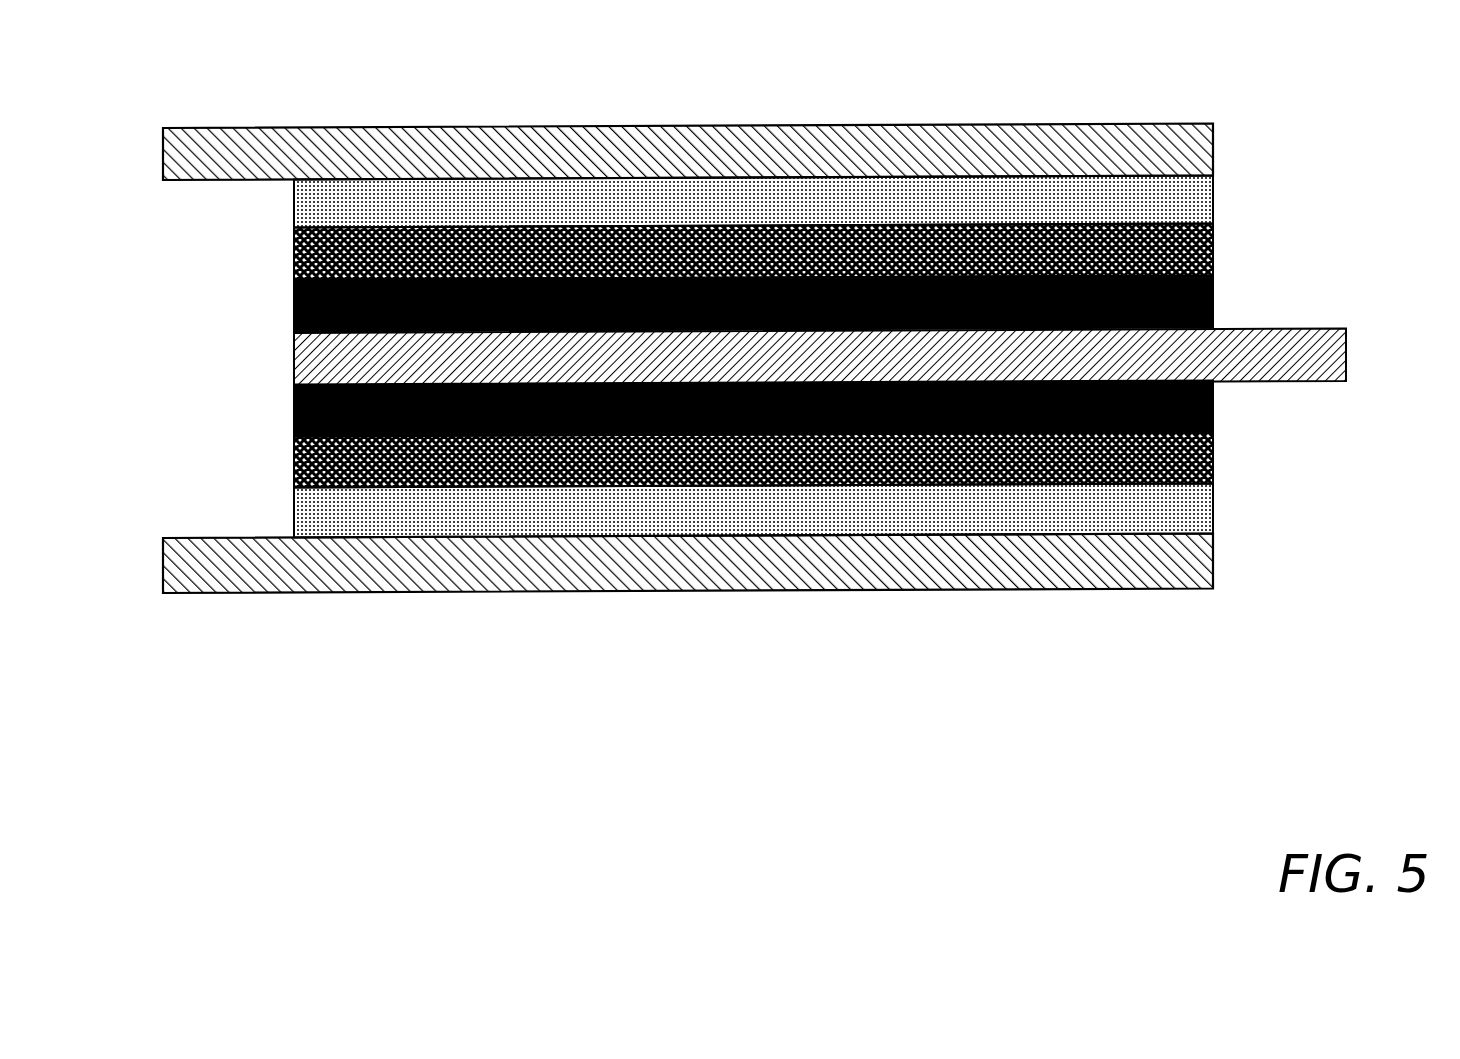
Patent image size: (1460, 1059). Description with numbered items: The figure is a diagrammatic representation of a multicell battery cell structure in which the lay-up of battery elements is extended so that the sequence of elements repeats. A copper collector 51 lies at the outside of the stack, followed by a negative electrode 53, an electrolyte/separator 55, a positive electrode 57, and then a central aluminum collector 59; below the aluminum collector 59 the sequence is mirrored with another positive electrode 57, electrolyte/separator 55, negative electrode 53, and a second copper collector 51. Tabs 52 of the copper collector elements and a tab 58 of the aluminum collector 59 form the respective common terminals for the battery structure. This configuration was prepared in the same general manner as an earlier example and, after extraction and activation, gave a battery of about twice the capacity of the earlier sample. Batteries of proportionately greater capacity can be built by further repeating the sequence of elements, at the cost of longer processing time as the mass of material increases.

The copper collector 51 is at (1203, 157).
The tab 52 is at (192, 128).
The negative electrode 53 is at (1197, 203).
The electrolyte/separator 55 is at (1213, 255).
The positive electrode 57 is at (320, 305).
The tab 58 is at (1347, 355).
The aluminum collector 59 is at (320, 358).